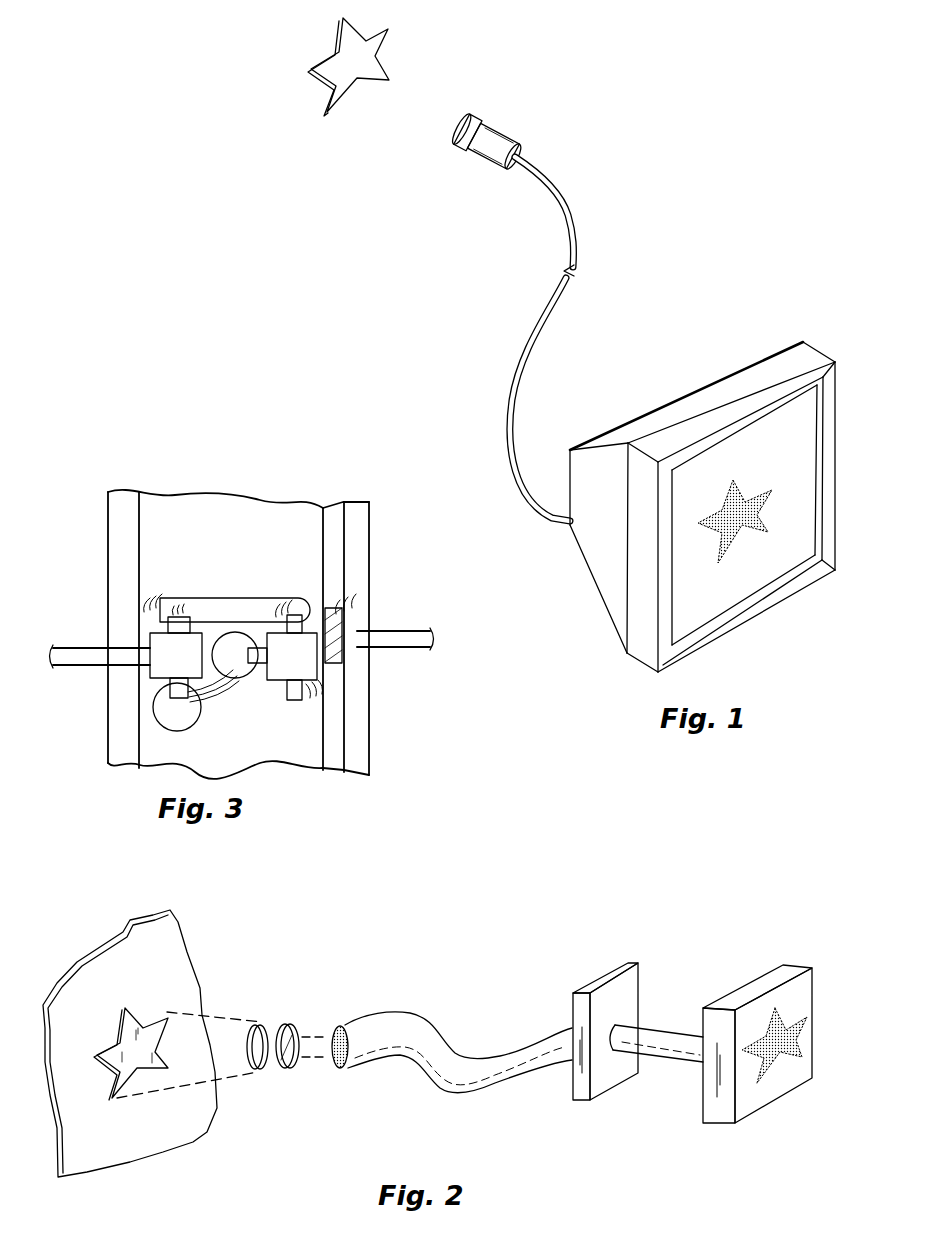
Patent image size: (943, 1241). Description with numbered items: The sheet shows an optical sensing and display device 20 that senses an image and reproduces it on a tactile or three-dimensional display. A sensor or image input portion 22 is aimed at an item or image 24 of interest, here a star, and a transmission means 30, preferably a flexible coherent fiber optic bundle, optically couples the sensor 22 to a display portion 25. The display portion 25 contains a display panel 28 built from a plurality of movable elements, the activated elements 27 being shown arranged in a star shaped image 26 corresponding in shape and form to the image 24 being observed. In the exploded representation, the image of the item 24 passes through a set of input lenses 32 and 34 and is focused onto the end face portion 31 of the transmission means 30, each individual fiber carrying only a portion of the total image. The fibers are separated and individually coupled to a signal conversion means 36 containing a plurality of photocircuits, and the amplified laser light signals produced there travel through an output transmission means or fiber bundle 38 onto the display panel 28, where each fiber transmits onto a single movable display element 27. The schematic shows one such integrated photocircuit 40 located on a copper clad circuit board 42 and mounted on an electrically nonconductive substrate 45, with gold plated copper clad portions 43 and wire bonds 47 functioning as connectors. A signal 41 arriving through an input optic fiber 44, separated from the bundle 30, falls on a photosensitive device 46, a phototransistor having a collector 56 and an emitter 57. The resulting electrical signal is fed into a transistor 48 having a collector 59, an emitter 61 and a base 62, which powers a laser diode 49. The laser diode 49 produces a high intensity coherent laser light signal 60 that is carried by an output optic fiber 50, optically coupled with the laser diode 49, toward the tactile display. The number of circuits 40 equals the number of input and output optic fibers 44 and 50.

In FIG. 1, the optical sensing and display device 20 is at (670, 390).
In FIG. 2, the optical sensing and display device 20 is at (555, 1040).
In FIG. 1, the sensor or image input portion 22 is at (500, 140).
In FIG. 1, the item or image of interest 24 is at (373, 43).
In FIG. 2, the item or image of interest 24 is at (153, 1075).
In FIG. 1, the display portion 25 is at (665, 405).
In FIG. 1, the star shaped image 26 is at (750, 519).
In FIG. 2, the star shaped image 26 is at (803, 1023).
In FIG. 1, the activated elements 27 is at (768, 530).
In FIG. 2, the activated elements 27 is at (800, 1055).
In FIG. 1, the display panel 28 is at (800, 412).
In FIG. 2, the display panel 28 is at (800, 982).
In FIG. 1, the transmission means 30 is at (578, 212).
In FIG. 2, the transmission means 30 is at (452, 1025).
In FIG. 2, the end face portion 31 is at (335, 1027).
In FIG. 2, the input lens 32 is at (262, 1027).
In FIG. 2, the input lens 34 is at (288, 1026).
In FIG. 2, the signal conversion means 36 is at (608, 975).
In FIG. 2, the output transmission means or fiber bundle 38 is at (653, 1040).
In FIG. 3, the integrated photocircuit 40 is at (254, 608).
In FIG. 3, the signal 41 is at (42, 653).
In FIG. 3, the copper clad circuit board 42 is at (123, 748).
In FIG. 3, the gold plated copper clad portions 43 is at (228, 612).
In FIG. 3, the input optic fiber 44 is at (80, 645).
In FIG. 3, the electrically nonconductive substrate 45 is at (197, 518).
In FIG. 3, the photosensitive device 46 is at (167, 645).
In FIG. 3, the wire bonds 47 is at (312, 697).
In FIG. 3, the transistor 48 is at (303, 653).
In FIG. 3, the laser diode 49 is at (335, 637).
In FIG. 3, the output optic fiber 50 is at (413, 642).
In FIG. 3, the collector 56 is at (173, 617).
In FIG. 3, the emitter 57 is at (167, 690).
In FIG. 3, the collector 59 is at (293, 613).
In FIG. 3, the coherent laser light signal 60 is at (438, 645).
In FIG. 3, the emitter 61 is at (287, 690).
In FIG. 3, the base 62 is at (253, 672).